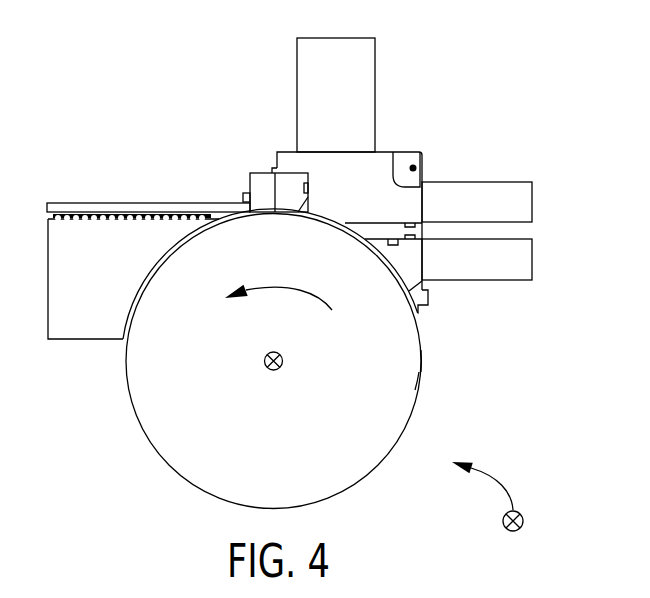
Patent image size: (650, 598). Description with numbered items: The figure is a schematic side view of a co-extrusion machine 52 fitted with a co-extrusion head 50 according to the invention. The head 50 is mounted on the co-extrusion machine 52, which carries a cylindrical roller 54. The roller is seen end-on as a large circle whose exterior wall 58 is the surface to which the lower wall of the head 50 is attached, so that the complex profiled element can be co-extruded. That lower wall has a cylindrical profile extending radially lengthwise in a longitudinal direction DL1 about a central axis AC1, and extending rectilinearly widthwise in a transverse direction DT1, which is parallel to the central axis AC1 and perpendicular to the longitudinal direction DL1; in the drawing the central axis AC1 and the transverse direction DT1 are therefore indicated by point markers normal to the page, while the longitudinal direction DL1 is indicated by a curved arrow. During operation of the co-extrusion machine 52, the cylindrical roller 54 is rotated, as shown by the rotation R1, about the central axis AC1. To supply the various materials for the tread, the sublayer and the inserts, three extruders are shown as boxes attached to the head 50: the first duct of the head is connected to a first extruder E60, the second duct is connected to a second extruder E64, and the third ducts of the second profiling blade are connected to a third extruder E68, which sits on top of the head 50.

The head 50 is at (414, 118).
The co-extrusion machine 52 is at (110, 479).
The cylindrical roller 54 is at (410, 378).
The exterior wall 58 is at (421, 361).
The third extruder E68 is at (318, 111).
The second extruder E64 is at (463, 216).
The first extruder E60 is at (463, 274).
The central axis AC1 is at (281, 369).
The rotation R1 is at (278, 281).
The longitudinal direction DL1 is at (498, 482).
The transverse direction DT1 is at (539, 521).